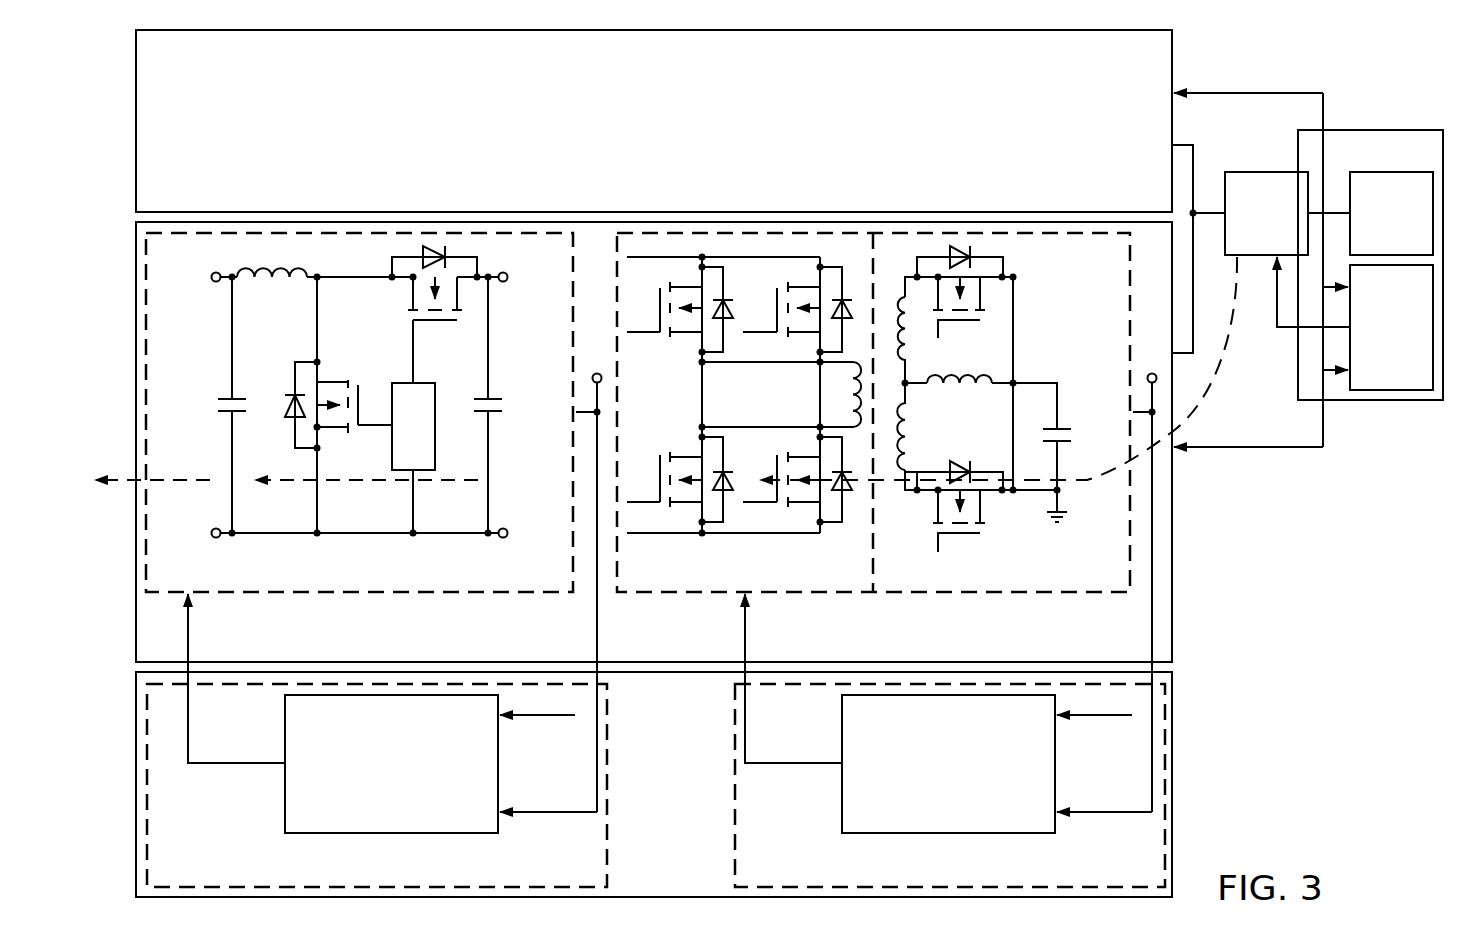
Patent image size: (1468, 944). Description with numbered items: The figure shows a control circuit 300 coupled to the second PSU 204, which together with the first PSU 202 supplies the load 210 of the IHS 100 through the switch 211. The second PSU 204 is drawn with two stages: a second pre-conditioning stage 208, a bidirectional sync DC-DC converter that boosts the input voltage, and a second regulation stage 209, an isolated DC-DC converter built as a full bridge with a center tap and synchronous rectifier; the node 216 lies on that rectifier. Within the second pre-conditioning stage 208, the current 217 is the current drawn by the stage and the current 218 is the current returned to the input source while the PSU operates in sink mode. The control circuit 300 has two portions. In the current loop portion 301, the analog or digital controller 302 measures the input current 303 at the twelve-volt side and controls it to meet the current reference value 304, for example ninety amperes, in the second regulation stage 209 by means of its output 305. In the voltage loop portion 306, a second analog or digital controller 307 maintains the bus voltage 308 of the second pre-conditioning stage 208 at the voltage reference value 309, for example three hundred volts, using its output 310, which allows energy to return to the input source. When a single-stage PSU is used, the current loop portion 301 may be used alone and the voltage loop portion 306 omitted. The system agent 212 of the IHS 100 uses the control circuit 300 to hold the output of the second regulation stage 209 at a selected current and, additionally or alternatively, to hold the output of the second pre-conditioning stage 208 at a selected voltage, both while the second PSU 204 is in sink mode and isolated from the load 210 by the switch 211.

The IHS 100 is at (1393, 126).
The first PSU 202 is at (633, 135).
The second PSU 204 is at (633, 641).
The second pre-conditioning stage 208 is at (282, 596).
The second regulation stage 209 is at (953, 596).
The load 210 is at (1372, 247).
The switch 211 is at (1247, 247).
The system agent 212 is at (1372, 373).
The synchronous rectifier transistor T3 node 216 is at (896, 483).
The current 217 is at (368, 484).
The current 218 is at (131, 483).
The control circuit 300 is at (650, 800).
The current loop portion 301 is at (928, 872).
The analog or digital controller 302 is at (928, 808).
The input current (I_in) 303 is at (1106, 818).
The reference value (Iref) 304 is at (1101, 721).
The output 305 is at (793, 766).
The voltage loop portion 306 is at (357, 872).
The analog or digital controller (voltage) 307 is at (371, 808).
The bus voltage (V_fb) 308 is at (547, 818).
The reference value (Vref) 309 is at (542, 721).
The output 310 is at (237, 766).